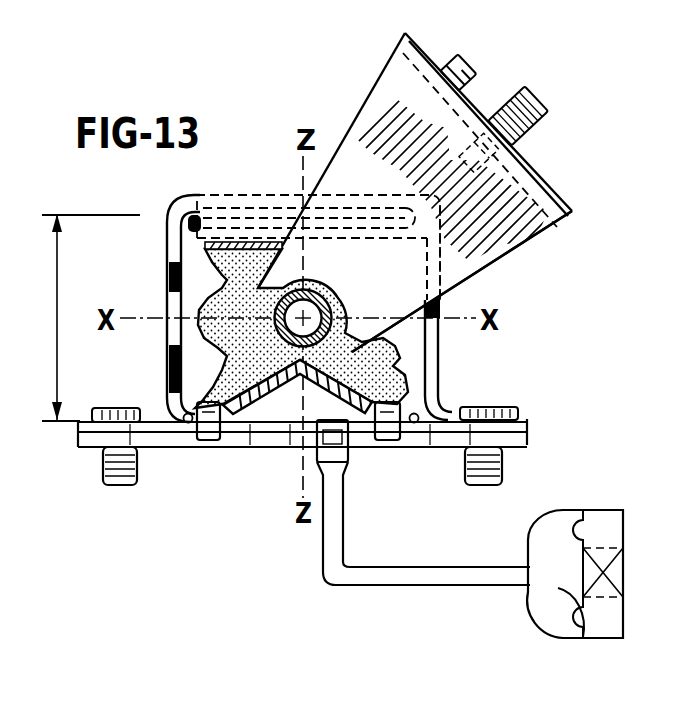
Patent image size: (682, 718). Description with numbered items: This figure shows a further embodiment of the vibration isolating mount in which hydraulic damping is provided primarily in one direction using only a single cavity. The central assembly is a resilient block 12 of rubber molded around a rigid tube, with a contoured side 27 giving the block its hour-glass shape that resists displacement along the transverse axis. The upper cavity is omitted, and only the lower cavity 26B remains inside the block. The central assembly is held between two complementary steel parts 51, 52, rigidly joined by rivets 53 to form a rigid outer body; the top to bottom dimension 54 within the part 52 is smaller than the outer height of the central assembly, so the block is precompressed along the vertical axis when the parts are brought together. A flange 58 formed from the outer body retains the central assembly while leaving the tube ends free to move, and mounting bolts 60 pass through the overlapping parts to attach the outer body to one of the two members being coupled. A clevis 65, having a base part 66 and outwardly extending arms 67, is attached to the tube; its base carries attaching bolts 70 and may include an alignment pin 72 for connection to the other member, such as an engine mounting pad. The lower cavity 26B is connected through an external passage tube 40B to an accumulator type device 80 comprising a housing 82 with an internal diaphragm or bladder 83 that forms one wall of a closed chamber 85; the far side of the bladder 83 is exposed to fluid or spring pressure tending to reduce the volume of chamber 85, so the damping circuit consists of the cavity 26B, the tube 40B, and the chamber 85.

The resilient block 12 is at (399, 361).
The lower cavity 26B is at (262, 437).
The side of the block 27 is at (203, 345).
The external passage tube 40B is at (336, 578).
The complementary part 51 is at (181, 442).
The complementary part 52 is at (167, 260).
The rivets 53 is at (162, 408).
The top to bottom dimension 54 is at (91, 317).
The flange 58 is at (258, 200).
The mounting bolts 60 is at (103, 465).
The clevis 65 is at (524, 258).
The base part 66 is at (542, 162).
The arms 67 is at (380, 88).
The attaching bolts 70 is at (538, 76).
The alignment pin 72 is at (457, 58).
The accumulator type device 80 is at (535, 596).
The housing 82 is at (532, 523).
The diaphragm or bladder 83 is at (561, 636).
The closed chamber 85 is at (535, 602).